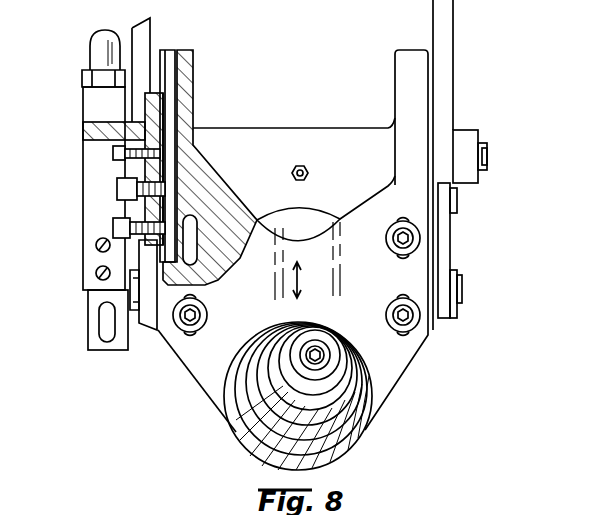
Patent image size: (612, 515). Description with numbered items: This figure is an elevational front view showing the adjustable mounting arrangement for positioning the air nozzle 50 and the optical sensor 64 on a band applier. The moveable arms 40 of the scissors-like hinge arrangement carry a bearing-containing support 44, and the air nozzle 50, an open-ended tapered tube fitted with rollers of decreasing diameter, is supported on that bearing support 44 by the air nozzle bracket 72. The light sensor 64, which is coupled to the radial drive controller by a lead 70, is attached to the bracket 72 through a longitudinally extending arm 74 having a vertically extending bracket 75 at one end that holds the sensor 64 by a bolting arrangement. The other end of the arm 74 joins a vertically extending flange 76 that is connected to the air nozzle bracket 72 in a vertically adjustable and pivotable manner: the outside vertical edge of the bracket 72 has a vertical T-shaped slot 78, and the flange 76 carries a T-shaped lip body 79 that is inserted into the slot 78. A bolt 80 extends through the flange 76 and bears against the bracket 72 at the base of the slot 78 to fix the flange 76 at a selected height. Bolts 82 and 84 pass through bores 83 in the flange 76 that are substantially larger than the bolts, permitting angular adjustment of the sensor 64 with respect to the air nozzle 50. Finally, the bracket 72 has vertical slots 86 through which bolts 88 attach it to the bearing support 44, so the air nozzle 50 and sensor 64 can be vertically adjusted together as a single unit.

The moveable arms 40 is at (147, 33).
The bearing-containing support 44 is at (293, 143).
The air nozzle 50 is at (330, 412).
The optical sensor 64 is at (100, 313).
The lead or coupling 70 is at (95, 45).
The air nozzle bracket 72 is at (393, 183).
The longitudinally extending arm 74 is at (100, 120).
The bracket 75 is at (97, 173).
The vertically extending flange 76 is at (155, 108).
The T-shaped slot 78 is at (174, 52).
The T-shaped lip body 79 is at (165, 135).
The bolt 80 is at (118, 190).
The bolt 82 is at (113, 152).
The bores 83 is at (125, 248).
The bolt 84 is at (113, 228).
The vertical slots 86 is at (200, 200).
The bolts 88 is at (207, 310).